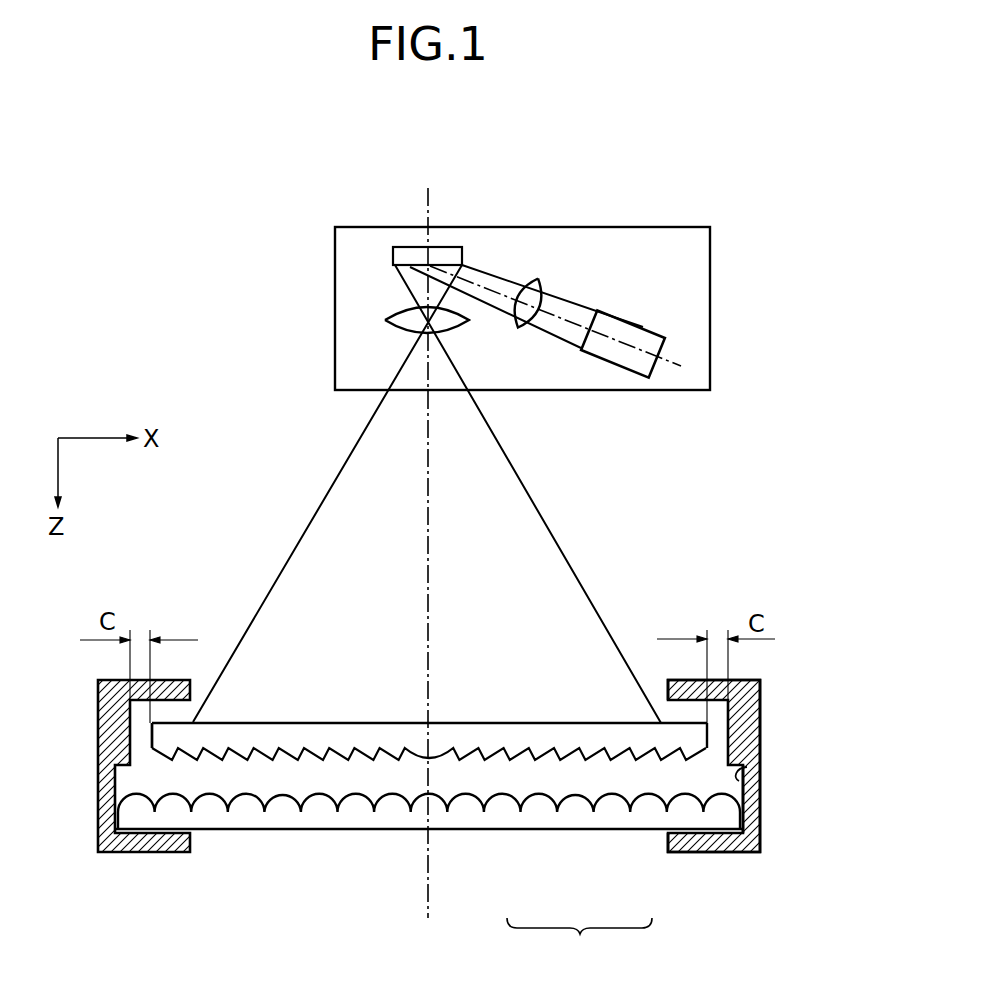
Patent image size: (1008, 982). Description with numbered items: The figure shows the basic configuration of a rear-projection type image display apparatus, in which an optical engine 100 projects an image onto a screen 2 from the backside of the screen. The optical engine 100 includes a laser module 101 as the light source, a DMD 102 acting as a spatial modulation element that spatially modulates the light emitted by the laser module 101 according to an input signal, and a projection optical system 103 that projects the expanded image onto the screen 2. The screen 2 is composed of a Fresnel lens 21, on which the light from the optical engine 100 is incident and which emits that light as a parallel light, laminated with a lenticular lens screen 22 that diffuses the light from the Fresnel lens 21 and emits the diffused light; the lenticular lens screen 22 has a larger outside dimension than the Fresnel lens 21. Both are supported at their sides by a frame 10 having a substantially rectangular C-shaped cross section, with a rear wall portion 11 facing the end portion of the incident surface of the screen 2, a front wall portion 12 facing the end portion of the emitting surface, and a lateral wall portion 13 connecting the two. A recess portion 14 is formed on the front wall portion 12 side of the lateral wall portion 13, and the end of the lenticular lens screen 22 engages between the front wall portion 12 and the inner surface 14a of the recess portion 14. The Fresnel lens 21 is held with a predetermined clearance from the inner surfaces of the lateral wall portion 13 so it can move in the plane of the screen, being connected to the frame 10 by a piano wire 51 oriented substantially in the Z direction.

The optical engine 100 is at (580, 227).
The laser module 101 is at (641, 326).
The DMD 102 is at (393, 255).
The projection optical system 103 is at (403, 308).
The frame 10 is at (748, 702).
The rear wall portion 11 is at (712, 700).
The front wall portion 12 is at (693, 834).
The lateral wall portion 13 is at (762, 745).
The recess portion 14 is at (740, 803).
The inner surface 14a is at (740, 780).
The Fresnel lens 21 is at (583, 750).
The lenticular lens screen 22 is at (630, 829).
The screen 2 is at (588, 965).
The wire 51 is at (150, 717).